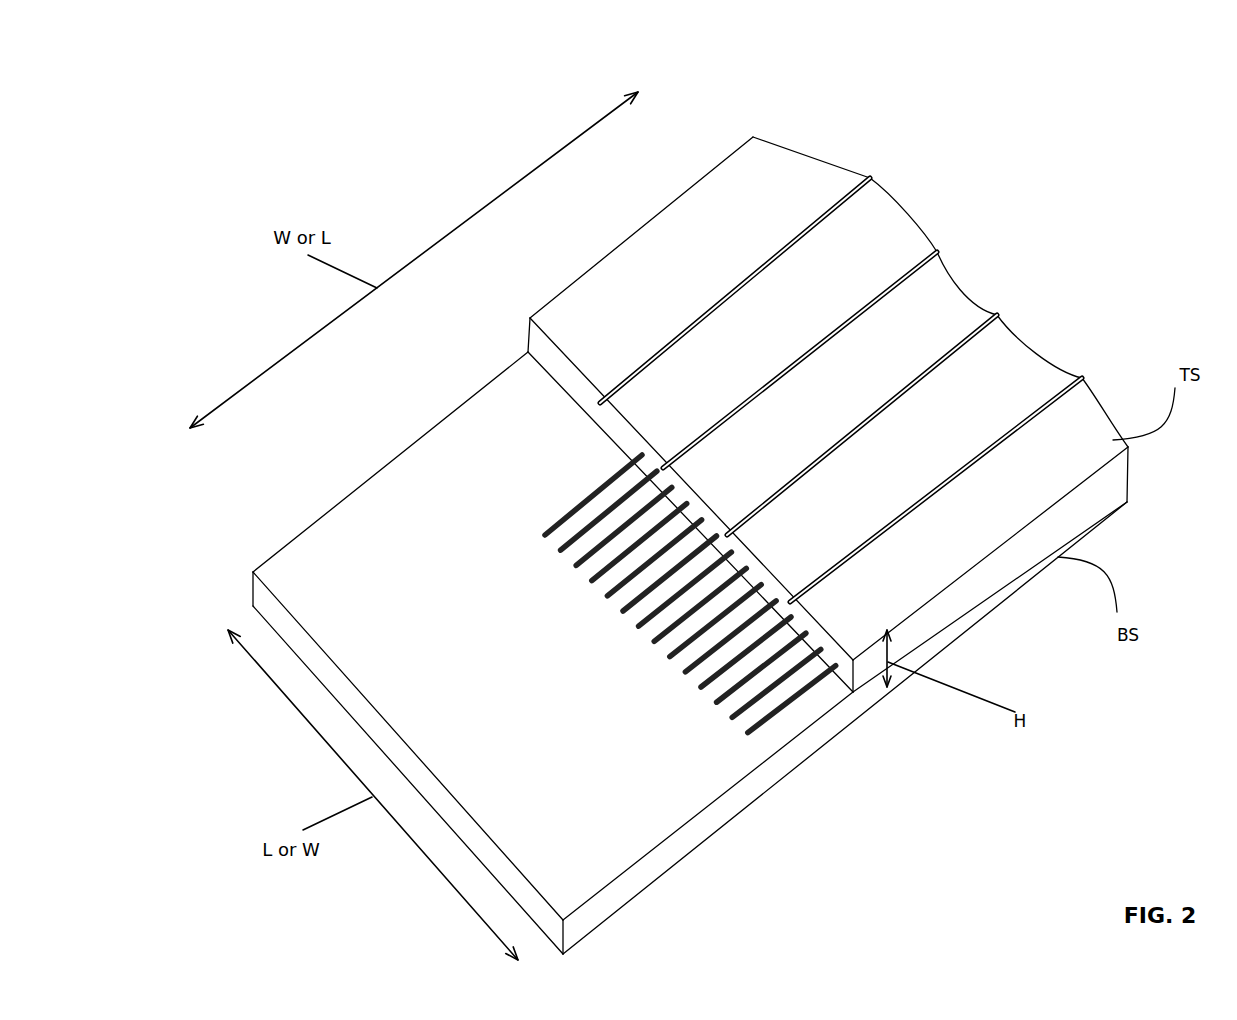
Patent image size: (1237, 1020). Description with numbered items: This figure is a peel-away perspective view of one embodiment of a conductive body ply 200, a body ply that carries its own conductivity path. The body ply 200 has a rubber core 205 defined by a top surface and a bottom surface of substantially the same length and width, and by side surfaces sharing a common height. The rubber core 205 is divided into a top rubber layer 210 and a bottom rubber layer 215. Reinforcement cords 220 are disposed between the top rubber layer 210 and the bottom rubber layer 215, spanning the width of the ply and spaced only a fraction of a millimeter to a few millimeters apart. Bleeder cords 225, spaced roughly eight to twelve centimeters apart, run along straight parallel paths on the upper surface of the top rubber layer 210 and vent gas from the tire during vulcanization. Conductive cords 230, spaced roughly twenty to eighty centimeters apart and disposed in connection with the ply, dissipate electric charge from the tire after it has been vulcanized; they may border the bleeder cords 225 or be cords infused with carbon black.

The conductive body ply 200 is at (792, 113).
The rubber core 205 is at (1098, 493).
The top rubber layer 210 is at (523, 328).
The bottom rubber layer 215 is at (487, 407).
The reinforcement cords 220 is at (792, 693).
The bleeder cords 225 is at (873, 179).
The conductive cords 230 is at (1000, 314).